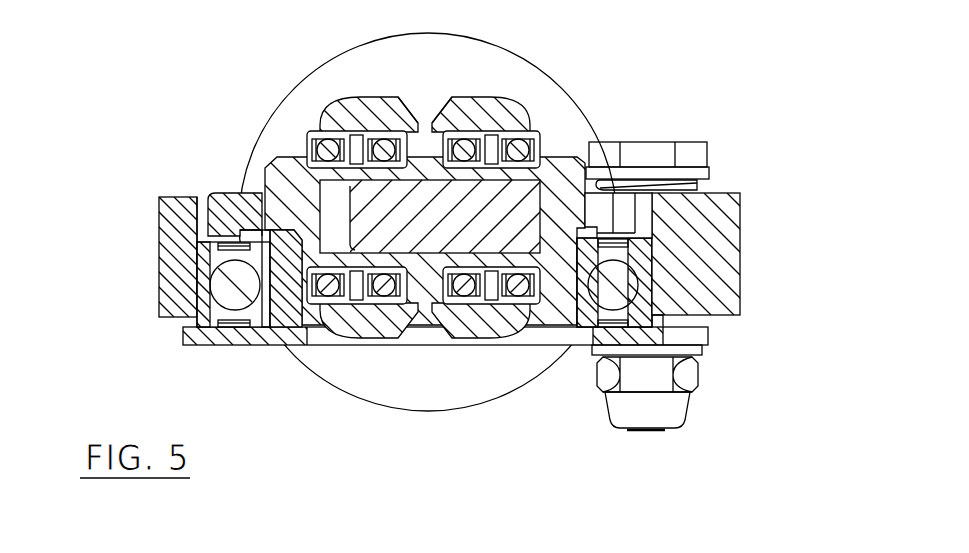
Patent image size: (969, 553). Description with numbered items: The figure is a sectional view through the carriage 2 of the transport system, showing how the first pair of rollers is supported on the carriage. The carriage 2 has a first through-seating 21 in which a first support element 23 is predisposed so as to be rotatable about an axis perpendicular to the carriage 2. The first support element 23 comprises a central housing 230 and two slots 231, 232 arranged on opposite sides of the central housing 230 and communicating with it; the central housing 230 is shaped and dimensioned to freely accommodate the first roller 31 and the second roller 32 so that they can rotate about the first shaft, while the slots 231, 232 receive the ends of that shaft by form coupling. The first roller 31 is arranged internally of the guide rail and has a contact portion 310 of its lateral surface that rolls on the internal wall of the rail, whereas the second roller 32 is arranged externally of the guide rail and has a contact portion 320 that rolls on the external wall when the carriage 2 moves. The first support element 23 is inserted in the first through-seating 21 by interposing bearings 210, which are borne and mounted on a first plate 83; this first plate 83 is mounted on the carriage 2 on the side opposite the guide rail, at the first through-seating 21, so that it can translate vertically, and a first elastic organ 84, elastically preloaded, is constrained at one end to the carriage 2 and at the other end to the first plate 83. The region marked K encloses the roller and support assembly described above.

The carriage 2 is at (187, 193).
The first through-seating 21 is at (203, 200).
The first support element 23 is at (220, 193).
The slot 231 is at (255, 205).
The first roller 31 is at (352, 110).
The contact portion 310 is at (408, 100).
The second roller 32 is at (497, 110).
The contact portion 320 is at (445, 103).
The detail region K is at (555, 78).
The first elastic organ 84 is at (705, 184).
The slot 232 is at (597, 213).
The first plate 83 is at (688, 337).
The bearings 210 is at (207, 314).
The central housing 230 is at (310, 315).